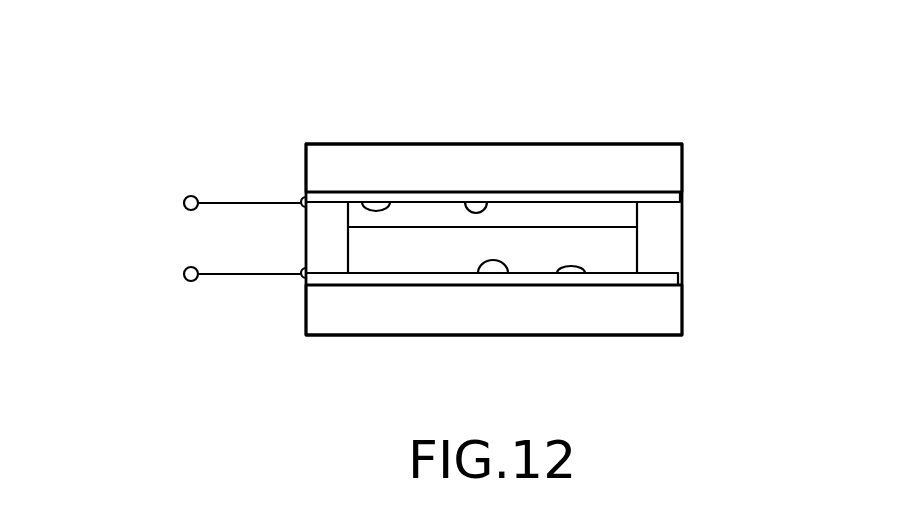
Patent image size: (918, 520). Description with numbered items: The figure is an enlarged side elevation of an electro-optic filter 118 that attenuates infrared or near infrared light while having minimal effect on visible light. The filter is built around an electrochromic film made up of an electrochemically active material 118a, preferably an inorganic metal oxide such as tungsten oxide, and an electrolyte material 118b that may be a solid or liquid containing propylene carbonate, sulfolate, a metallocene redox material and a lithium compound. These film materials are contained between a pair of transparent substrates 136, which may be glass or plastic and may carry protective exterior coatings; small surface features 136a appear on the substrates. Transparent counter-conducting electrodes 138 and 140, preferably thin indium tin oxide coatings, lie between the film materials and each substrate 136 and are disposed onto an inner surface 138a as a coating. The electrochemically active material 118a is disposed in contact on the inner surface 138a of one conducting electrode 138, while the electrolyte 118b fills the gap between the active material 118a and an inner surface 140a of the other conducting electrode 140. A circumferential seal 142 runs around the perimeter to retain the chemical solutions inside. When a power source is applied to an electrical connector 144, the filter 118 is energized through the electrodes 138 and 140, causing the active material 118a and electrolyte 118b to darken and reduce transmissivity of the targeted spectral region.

The electro-optic filter 118 is at (222, 121).
The electrochemically active material 118a is at (525, 215).
The electrolyte material 118b is at (593, 240).
The transparent substrate 136 is at (420, 163).
The plate dimple 136a is at (360, 197).
The counter-conducting electrode 138 is at (548, 198).
The inner surface 138a is at (465, 200).
The counter-conducting electrode 140 is at (405, 280).
The inner surface 140a is at (500, 283).
The circumferential seal 142 is at (330, 197).
The electrical connector 144 is at (165, 238).